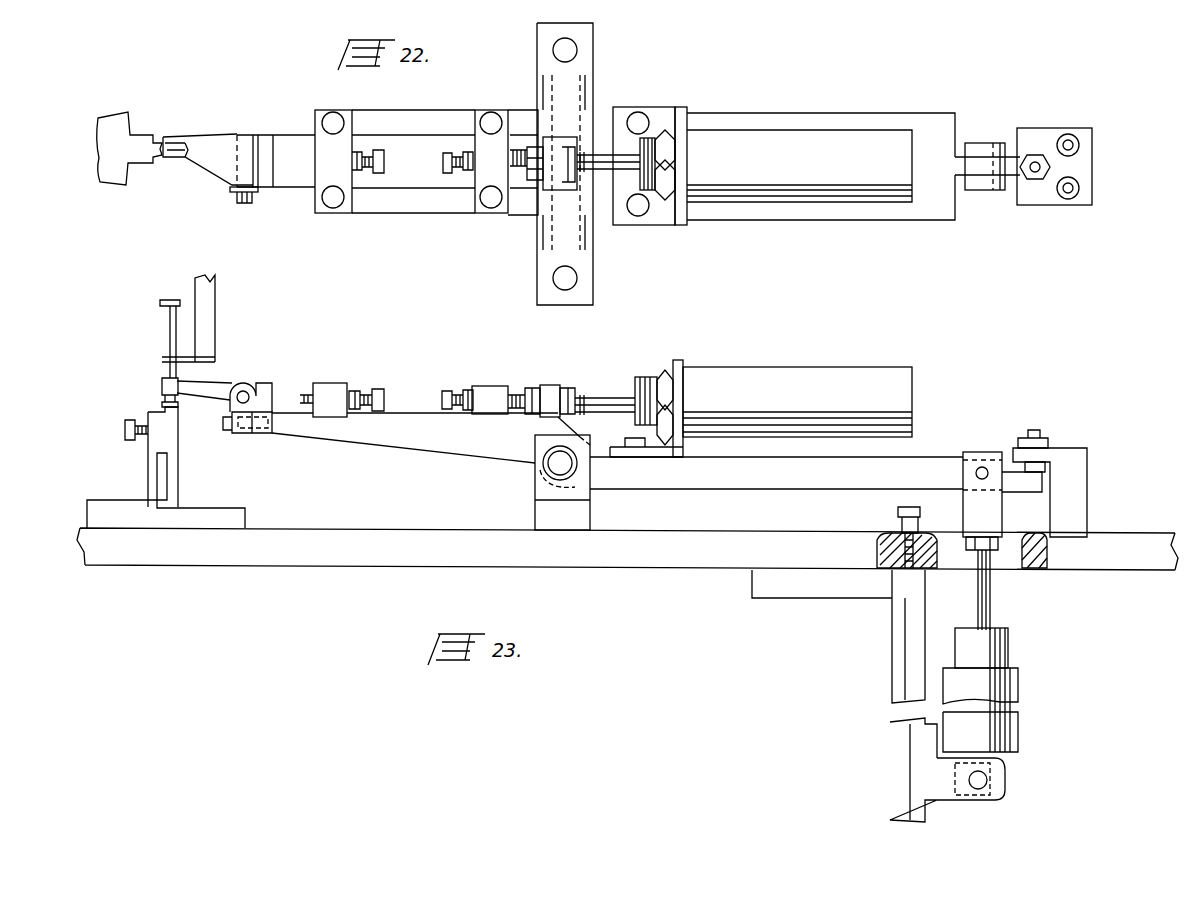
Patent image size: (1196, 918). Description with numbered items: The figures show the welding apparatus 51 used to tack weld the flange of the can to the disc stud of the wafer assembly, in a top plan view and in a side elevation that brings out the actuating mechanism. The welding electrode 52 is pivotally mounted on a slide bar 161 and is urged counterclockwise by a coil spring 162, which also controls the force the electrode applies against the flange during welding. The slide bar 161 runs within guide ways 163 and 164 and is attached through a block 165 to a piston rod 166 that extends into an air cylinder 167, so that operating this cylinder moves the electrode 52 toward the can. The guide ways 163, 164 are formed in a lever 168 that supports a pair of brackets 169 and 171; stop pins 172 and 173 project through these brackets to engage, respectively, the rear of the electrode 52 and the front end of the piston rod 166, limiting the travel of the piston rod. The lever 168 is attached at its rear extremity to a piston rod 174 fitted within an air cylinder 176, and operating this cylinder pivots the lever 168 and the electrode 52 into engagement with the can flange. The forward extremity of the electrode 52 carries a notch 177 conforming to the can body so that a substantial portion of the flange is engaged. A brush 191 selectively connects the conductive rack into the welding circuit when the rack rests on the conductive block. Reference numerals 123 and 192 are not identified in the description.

In FIG. 23, the welding apparatus 51 is at (581, 372).
In FIG. 22, the welding electrode 52 is at (208, 143).
In FIG. 23, the welding electrode 52 is at (216, 388).
In FIG. 22, the cross slide block 123 is at (520, 155).
In FIG. 22, the slide bar 161 is at (288, 133).
In FIG. 23, the slide bar 161 is at (288, 428).
In FIG. 22, the coil spring 162 is at (258, 207).
In FIG. 23, the coil spring 162 is at (231, 435).
In FIG. 22, the guide way 163 is at (408, 112).
In FIG. 22, the guide way 164 is at (398, 202).
In FIG. 22, the block 165 is at (550, 140).
In FIG. 23, the block 165 is at (550, 387).
In FIG. 22, the piston rod 166 is at (595, 158).
In FIG. 23, the piston rod 166 is at (597, 402).
In FIG. 22, the air cylinder 167 is at (763, 143).
In FIG. 23, the air cylinder 167 is at (812, 373).
In FIG. 22, the lever 168 is at (877, 215).
In FIG. 23, the lever 168 is at (717, 480).
In FIG. 22, the bracket 169 is at (325, 181).
In FIG. 23, the bracket 169 is at (330, 385).
In FIG. 22, the bracket 171 is at (482, 183).
In FIG. 23, the bracket 171 is at (477, 386).
In FIG. 22, the stop pin 172 is at (378, 148).
In FIG. 23, the stop pin 172 is at (378, 388).
In FIG. 22, the stop pin 173 is at (443, 160).
In FIG. 23, the stop pin 173 is at (443, 390).
In FIG. 23, the piston rod 174 is at (990, 601).
In FIG. 23, the air cylinder 176 is at (1018, 686).
In FIG. 22, the notch 177 is at (158, 133).
In FIG. 23, the brush 191 is at (148, 427).
In FIG. 23, the pivot pin 192 is at (259, 383).